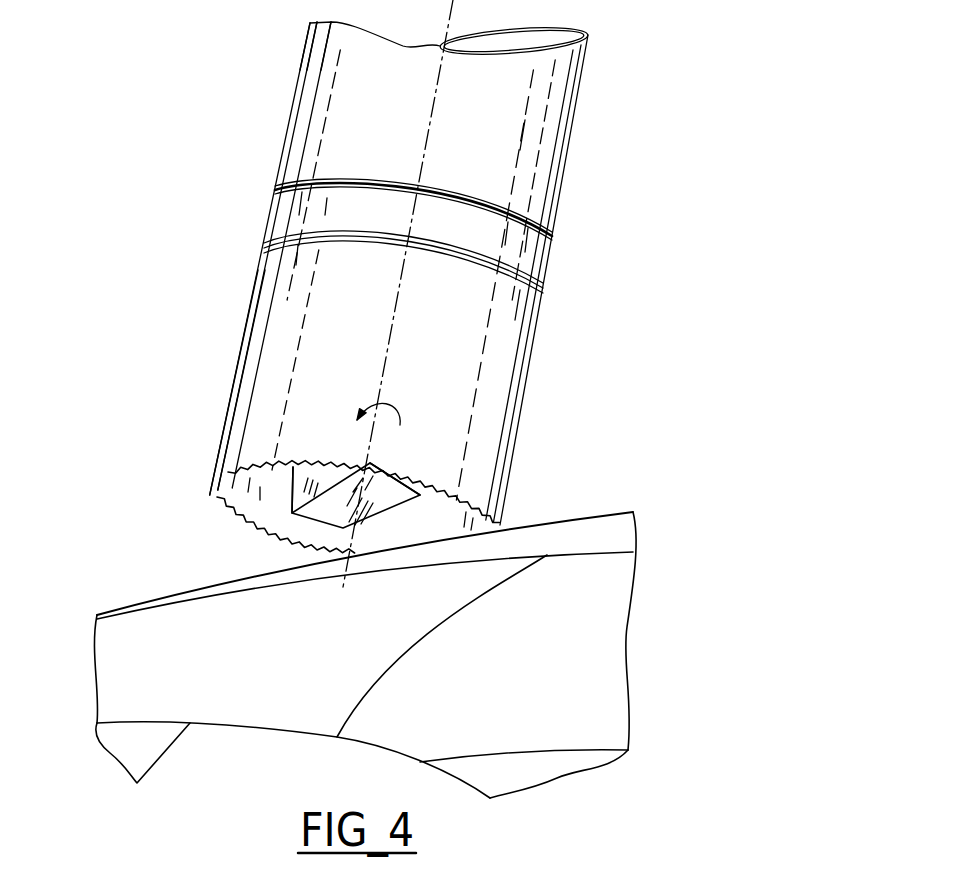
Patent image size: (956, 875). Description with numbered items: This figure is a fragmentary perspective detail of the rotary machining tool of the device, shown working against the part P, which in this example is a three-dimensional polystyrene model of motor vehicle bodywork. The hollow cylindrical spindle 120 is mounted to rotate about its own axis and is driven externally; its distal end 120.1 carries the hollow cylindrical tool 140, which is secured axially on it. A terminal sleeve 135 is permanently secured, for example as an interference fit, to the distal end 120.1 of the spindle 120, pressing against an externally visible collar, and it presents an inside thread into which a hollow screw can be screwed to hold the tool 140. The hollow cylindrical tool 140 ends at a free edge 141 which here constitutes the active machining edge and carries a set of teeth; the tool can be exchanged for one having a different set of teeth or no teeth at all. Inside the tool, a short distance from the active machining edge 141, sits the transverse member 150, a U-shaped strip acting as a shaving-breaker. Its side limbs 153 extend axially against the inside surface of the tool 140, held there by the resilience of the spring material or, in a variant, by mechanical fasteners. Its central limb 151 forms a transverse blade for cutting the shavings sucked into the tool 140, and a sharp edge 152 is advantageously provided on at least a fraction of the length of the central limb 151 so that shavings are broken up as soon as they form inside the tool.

The hollow cylindrical spindle 120 is at (567, 170).
The distal end of the hollow cylindrical spindle 120.1 is at (300, 132).
The terminal sleeve 135 is at (533, 253).
The hollow cylindrical tool 140 is at (313, 411).
The free edge 141 is at (221, 490).
The transverse member 150 is at (322, 473).
The central limb 151 is at (380, 499).
The sharp edge 152 is at (358, 453).
The side limbs 153 is at (297, 470).
The part P is at (120, 613).